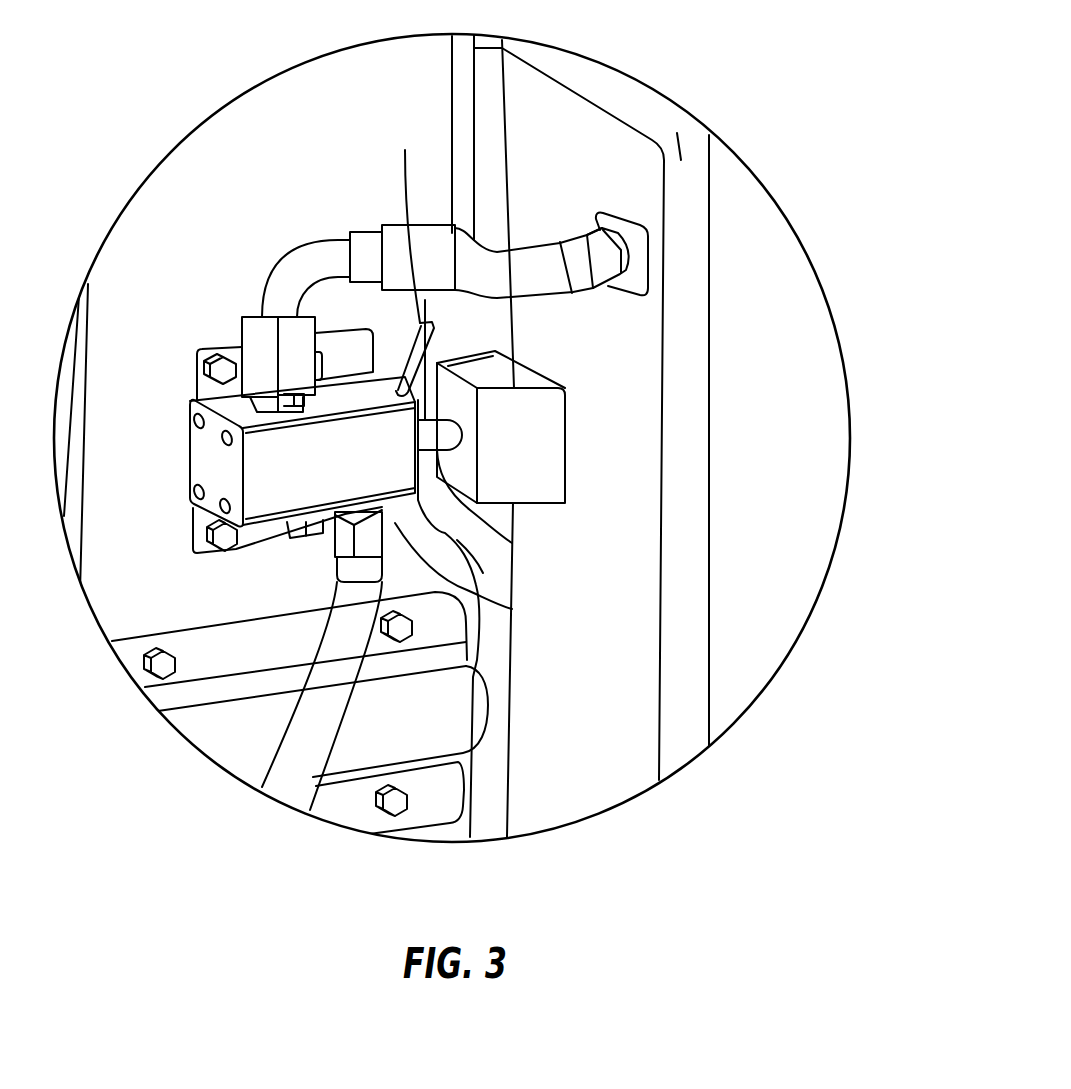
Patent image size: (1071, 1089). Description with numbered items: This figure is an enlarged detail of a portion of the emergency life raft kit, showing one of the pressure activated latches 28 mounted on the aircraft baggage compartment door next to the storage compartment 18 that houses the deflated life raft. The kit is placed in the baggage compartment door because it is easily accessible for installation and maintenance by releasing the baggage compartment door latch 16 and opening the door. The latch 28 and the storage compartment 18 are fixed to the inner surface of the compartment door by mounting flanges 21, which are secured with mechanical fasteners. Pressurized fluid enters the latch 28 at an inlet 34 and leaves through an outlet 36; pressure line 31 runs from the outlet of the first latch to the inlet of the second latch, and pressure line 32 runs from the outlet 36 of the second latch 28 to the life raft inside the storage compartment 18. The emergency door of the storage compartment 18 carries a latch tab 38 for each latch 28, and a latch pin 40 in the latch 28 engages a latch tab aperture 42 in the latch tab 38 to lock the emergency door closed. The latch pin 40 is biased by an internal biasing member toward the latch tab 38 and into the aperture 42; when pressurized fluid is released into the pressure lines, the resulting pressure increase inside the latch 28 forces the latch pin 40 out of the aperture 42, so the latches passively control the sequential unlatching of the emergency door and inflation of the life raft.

The baggage compartment door latch 16 is at (213, 726).
The storage compartment 18 is at (612, 157).
The mounting flanges 21 is at (220, 345).
The latch 28 is at (262, 450).
The pressure line 31 is at (293, 733).
The pressure line 32 is at (302, 252).
The inlet 34 is at (512, 609).
The outlet 36 is at (202, 390).
The latch tab 38 is at (552, 410).
The latch pin 40 is at (411, 250).
The latch tab aperture 42 is at (512, 543).